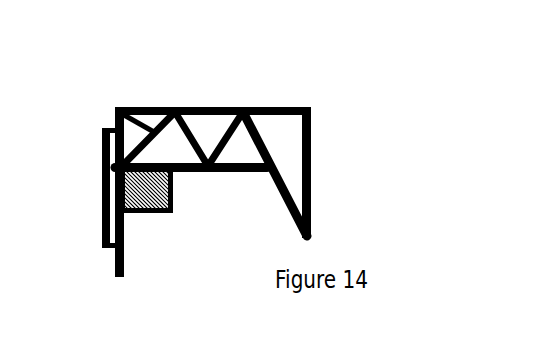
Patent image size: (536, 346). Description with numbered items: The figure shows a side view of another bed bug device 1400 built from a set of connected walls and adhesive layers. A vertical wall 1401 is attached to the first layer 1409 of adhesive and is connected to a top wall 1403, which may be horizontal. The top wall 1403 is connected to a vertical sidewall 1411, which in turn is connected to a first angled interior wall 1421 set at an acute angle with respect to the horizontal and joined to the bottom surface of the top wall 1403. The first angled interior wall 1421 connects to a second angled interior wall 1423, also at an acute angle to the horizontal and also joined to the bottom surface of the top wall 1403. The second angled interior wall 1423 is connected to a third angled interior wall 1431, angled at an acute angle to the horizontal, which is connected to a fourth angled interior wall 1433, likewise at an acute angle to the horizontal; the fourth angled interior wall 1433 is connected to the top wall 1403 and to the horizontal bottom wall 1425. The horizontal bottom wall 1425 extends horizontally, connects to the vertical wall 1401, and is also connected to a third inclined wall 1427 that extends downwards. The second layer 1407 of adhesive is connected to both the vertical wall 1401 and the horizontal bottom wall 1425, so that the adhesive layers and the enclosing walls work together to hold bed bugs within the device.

The bed bug device 1400 is at (211, 159).
The vertical wall 1401 is at (115, 267).
The top wall 1403 is at (239, 108).
The second layer of adhesive 1407 is at (147, 215).
The first layer of adhesive 1409 is at (100, 182).
The vertical sidewall 1411 is at (311, 153).
The first angled interior wall 1421 is at (309, 193).
The second angled interior wall 1423 is at (231, 172).
The horizontal bottom wall 1425 is at (192, 172).
The third inclined wall 1427 is at (281, 191).
The third angled interior wall 1431 is at (189, 108).
The fourth angled interior wall 1433 is at (117, 116).